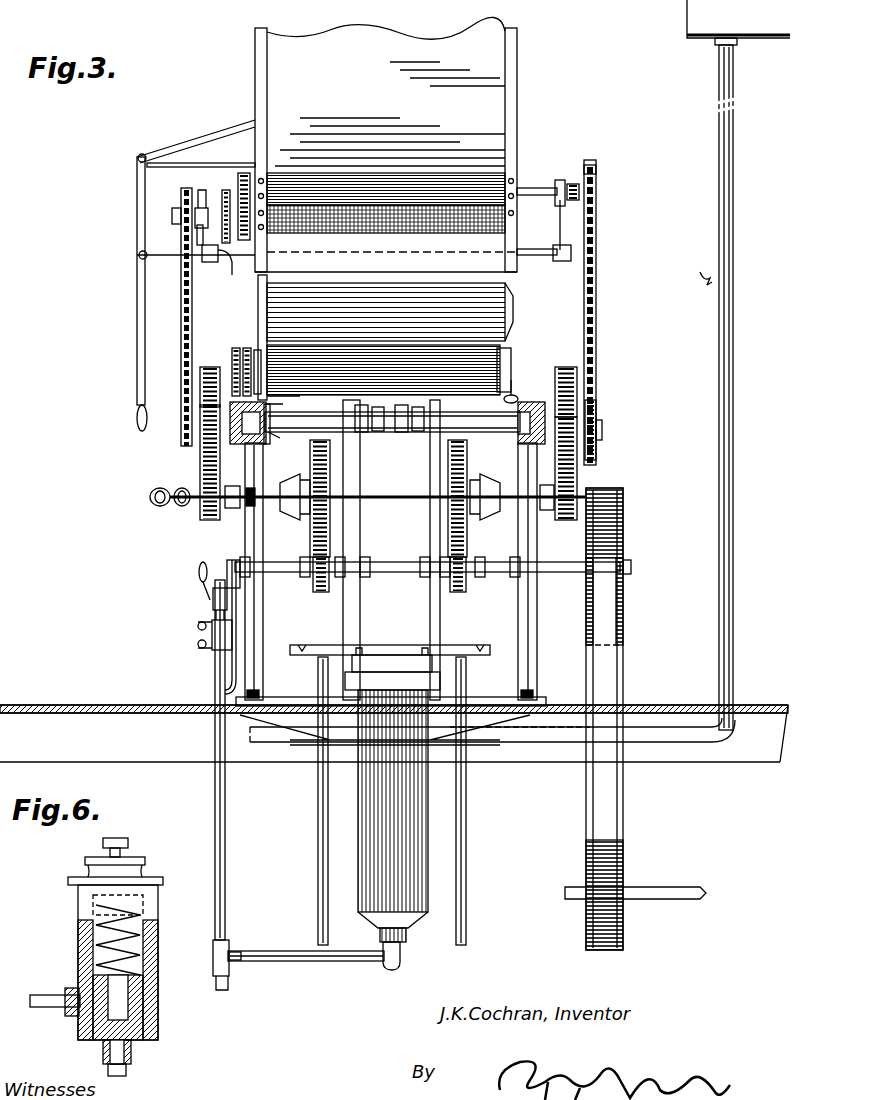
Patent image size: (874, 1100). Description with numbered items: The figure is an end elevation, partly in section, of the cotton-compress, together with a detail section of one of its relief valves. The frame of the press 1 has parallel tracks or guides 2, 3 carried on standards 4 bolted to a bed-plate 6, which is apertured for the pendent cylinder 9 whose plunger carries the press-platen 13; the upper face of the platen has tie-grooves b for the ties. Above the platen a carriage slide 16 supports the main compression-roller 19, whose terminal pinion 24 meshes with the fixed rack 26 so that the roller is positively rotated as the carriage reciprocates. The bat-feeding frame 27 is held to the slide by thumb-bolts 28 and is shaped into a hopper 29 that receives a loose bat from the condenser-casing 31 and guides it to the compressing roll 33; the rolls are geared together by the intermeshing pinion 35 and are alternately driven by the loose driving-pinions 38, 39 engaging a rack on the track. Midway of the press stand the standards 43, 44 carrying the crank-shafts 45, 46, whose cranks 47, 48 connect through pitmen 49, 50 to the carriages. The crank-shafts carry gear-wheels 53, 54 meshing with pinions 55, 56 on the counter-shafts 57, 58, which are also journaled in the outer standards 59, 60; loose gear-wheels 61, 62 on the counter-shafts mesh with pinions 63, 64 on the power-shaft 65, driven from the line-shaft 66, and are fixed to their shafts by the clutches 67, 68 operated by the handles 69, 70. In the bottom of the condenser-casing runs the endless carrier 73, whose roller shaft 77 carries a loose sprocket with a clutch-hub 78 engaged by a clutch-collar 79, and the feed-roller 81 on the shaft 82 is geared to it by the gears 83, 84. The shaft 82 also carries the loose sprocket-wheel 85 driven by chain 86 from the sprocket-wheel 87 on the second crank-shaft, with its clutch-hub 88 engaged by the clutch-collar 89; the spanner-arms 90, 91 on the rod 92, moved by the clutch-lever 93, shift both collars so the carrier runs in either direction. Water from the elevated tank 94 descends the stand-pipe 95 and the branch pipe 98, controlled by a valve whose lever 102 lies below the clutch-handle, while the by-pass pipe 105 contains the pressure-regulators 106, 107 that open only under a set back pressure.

In FIG. 3, the frame of the press 1 is at (270, 438).
In FIG. 3, the track or guide 2 is at (236, 444).
In FIG. 3, the track or guide 3 is at (536, 444).
In FIG. 3, the standards 4 is at (255, 684).
In FIG. 3, the bed-plate 6 is at (489, 704).
In FIG. 3, the pendent cylinder 9 is at (358, 808).
In FIG. 3, the press-platen 13 is at (378, 648).
In FIG. 3, the slide 16 is at (516, 432).
In FIG. 3, the main compression-roller 19 is at (200, 246).
In FIG. 3, the terminal pinion 24 is at (392, 421).
In FIG. 3, the fixed rack 26 is at (289, 442).
In FIG. 3, the frame 27 is at (288, 455).
In FIG. 3, the thumb-bolts 28 is at (287, 404).
In FIG. 3, the hopper 29 is at (390, 312).
In FIG. 3, the condenser-casing 31 is at (386, 144).
In FIG. 3, the bat forming, compressing, and feeding roll 33 is at (306, 360).
In FIG. 3, the intermeshing pinion 35 is at (257, 350).
In FIG. 3, the driving-pinion 38 is at (246, 350).
In FIG. 3, the driving-pinion 39 is at (234, 350).
In FIG. 3, the standard 43 is at (343, 613).
In FIG. 3, the standard 44 is at (430, 612).
In FIG. 3, the crank-shaft 45 is at (181, 432).
In FIG. 3, the crank-shaft 46 is at (597, 426).
In FIG. 3, the crank 47 is at (378, 432).
In FIG. 3, the crank 48 is at (401, 432).
In FIG. 3, the pitman 49 is at (363, 432).
In FIG. 3, the pitman 50 is at (416, 432).
In FIG. 3, the gear-wheel 53 is at (210, 367).
In FIG. 3, the gear-wheel 54 is at (564, 367).
In FIG. 3, the pinion 55 is at (203, 473).
In FIG. 3, the pinion 56 is at (566, 520).
In FIG. 3, the counter-shaft 57 is at (233, 508).
In FIG. 3, the counter-shaft 58 is at (546, 510).
In FIG. 3, the standard 59 is at (263, 600).
In FIG. 3, the standard 60 is at (537, 606).
In FIG. 3, the gear-wheel 61 is at (312, 540).
In FIG. 3, the gear-wheel 62 is at (467, 543).
In FIG. 3, the pinion 63 is at (319, 584).
In FIG. 3, the pinion 64 is at (464, 585).
In FIG. 3, the power-shaft 65 is at (390, 572).
In FIG. 3, the line-shaft 66 is at (662, 888).
In FIG. 3, the clutch 67 is at (298, 514).
In FIG. 3, the clutch 68 is at (488, 512).
In FIG. 3, the handle 69 is at (180, 506).
In FIG. 3, the handle 70 is at (150, 505).
In FIG. 3, the endless apron or carrier 73 is at (324, 244).
In FIG. 3, the shaft 77 is at (173, 218).
In FIG. 3, the clutch-hub 78 is at (200, 212).
In FIG. 3, the clutch-collar 79 is at (207, 262).
In FIG. 3, the feed-roller 81 is at (302, 182).
In FIG. 3, the shaft 82 is at (532, 196).
In FIG. 3, the gear 83 is at (244, 173).
In FIG. 3, the gear 84 is at (258, 282).
In FIG. 3, the sprocket-wheel 85 is at (590, 168).
In FIG. 3, the chain 86 is at (596, 258).
In FIG. 3, the sprocket-wheel 87 is at (599, 445).
In FIG. 3, the clutch-hub 88 is at (573, 184).
In FIG. 3, the clutch-collar 89 is at (551, 184).
In FIG. 3, the spanner-arm 90 is at (228, 278).
In FIG. 3, the spanner-arm 91 is at (558, 238).
In FIG. 3, the rod 92 is at (163, 258).
In FIG. 3, the clutch-lever 93 is at (137, 325).
In FIG. 3, the tank 94 is at (738, 22).
In FIG. 3, the stand-pipe 95 is at (719, 424).
In FIG. 3, the branch pipe 98 is at (215, 785).
In FIG. 6, the branch pipe 98 is at (126, 1070).
In FIG. 3, the lever 102 is at (203, 582).
In FIG. 6, the by-pass pipe 105 is at (40, 998).
In FIG. 3, the pressure-regulator 106 is at (198, 650).
In FIG. 3, the pressure-regulator 107 is at (213, 600).
In FIG. 6, the pressure-regulator 107 is at (78, 918).
In FIG. 3, the tie-grooves b is at (297, 631).